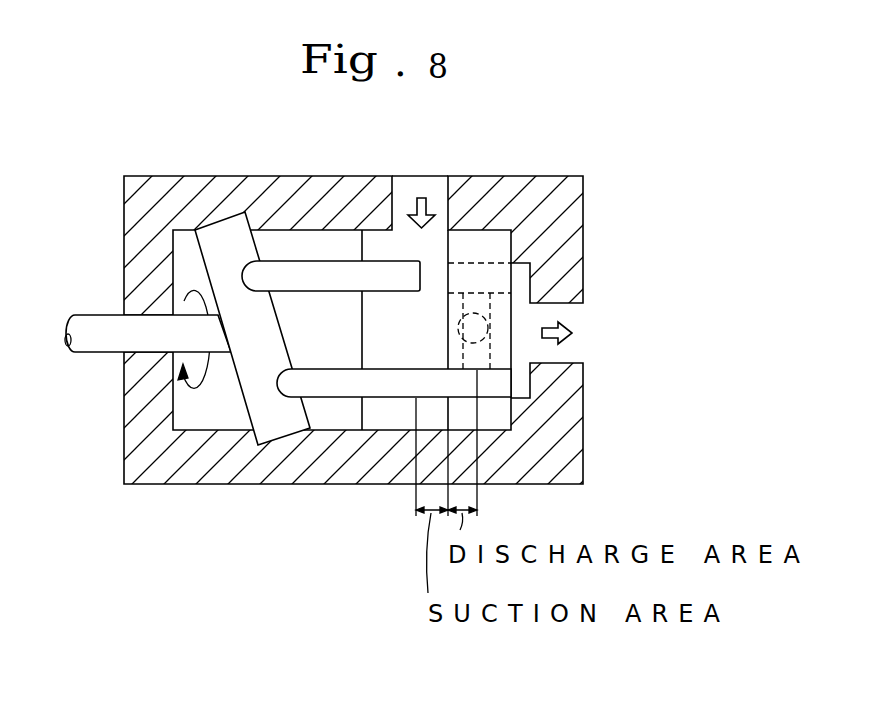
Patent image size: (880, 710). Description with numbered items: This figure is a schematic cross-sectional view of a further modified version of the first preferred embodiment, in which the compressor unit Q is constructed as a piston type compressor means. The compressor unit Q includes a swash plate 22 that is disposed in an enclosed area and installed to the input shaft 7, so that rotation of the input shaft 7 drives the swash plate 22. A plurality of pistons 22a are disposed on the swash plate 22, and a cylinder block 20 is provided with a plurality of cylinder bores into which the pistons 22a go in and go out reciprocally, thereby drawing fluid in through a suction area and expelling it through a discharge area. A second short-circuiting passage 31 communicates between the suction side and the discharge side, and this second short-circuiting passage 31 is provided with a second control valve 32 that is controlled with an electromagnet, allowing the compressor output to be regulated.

The compressor unit Q is at (598, 211).
The input shaft 7 is at (93, 338).
The cylinder block 20 is at (477, 247).
The swash plate 22 is at (225, 238).
The pistons 22a is at (325, 275).
The second short-circuiting passage 31 is at (478, 308).
The second control valve 32 is at (475, 332).